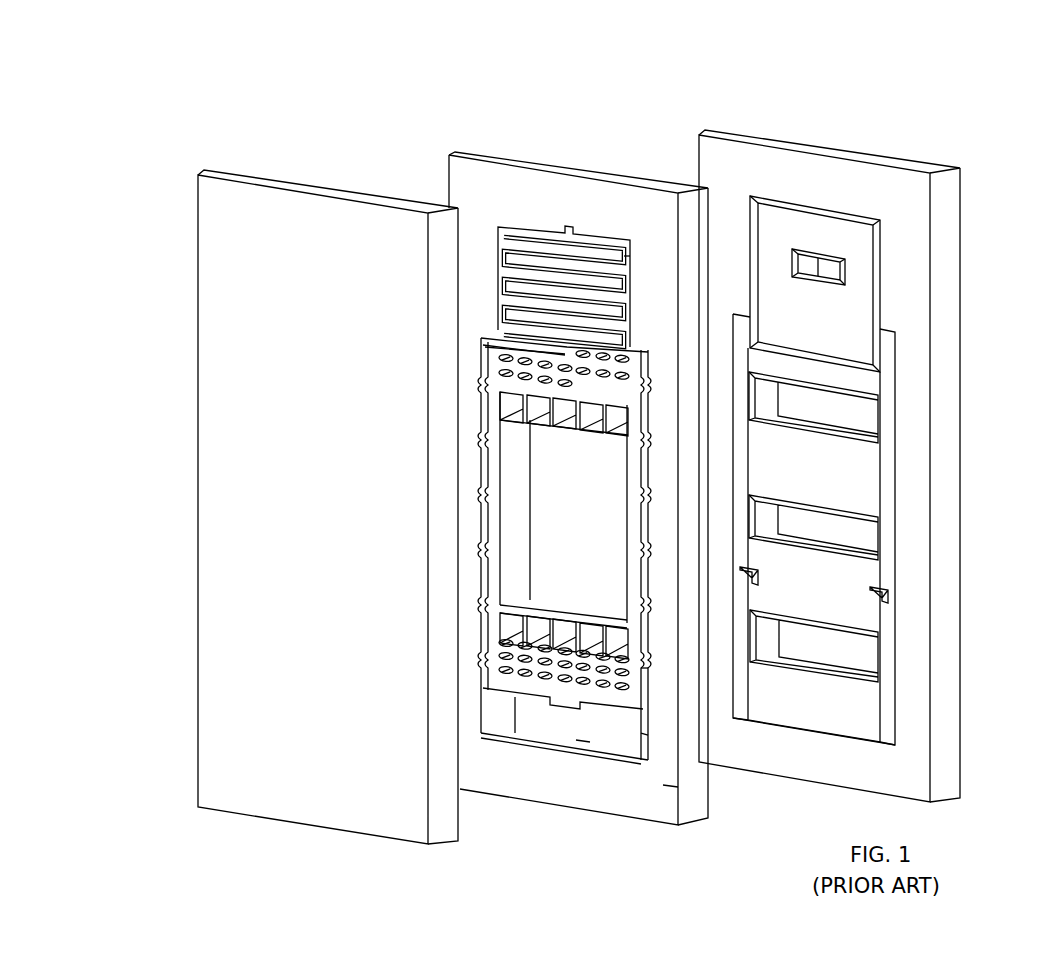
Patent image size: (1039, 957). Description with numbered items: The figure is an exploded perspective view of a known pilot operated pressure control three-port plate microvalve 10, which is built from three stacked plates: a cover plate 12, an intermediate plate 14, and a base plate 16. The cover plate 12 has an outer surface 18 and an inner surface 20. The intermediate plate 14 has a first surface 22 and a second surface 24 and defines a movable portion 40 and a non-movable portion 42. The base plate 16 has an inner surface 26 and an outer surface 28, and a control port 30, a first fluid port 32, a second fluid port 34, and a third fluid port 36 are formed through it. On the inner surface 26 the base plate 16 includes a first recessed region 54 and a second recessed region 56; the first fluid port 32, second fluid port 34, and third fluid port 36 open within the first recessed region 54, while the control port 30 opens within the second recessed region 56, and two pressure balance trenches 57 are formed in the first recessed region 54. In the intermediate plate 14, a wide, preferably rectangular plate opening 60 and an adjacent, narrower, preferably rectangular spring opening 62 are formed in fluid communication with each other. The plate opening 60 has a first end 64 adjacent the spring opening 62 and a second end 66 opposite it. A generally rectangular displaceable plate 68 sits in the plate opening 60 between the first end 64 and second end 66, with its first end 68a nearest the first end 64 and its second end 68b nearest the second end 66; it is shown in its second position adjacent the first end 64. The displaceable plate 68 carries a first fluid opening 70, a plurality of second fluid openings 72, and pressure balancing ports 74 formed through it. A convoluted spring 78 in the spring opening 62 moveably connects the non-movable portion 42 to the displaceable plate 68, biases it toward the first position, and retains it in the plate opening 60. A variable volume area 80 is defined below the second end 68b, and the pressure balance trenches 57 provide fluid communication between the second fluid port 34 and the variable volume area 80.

The microvalve 10 is at (153, 97).
The cover plate 12 is at (328, 480).
The intermediate plate 14 is at (573, 480).
The base plate 16 is at (859, 440).
The outer surface 18 is at (234, 219).
The inner surface 20 is at (277, 177).
The first surface 22 is at (484, 193).
The second surface 24 is at (535, 155).
The inner surface 26 is at (736, 175).
The outer surface 28 is at (780, 135).
The control port 30 is at (838, 270).
The first fluid port 32 is at (870, 655).
The second fluid port 34 is at (870, 533).
The third fluid port 36 is at (870, 415).
The movable portion 40 is at (652, 674).
The non-movable portion 42 is at (663, 785).
The first recessed region 54 is at (870, 474).
The second recessed region 56 is at (860, 307).
The pressure balance trenches 57 is at (757, 577).
The plate opening 60 is at (643, 738).
The spring opening 62 is at (596, 233).
The first end 64 is at (646, 358).
The second end 66 is at (585, 745).
The displaceable plate 68 is at (504, 565).
The first end 68a is at (492, 348).
The second end 68b is at (483, 683).
The first fluid opening 70 is at (503, 474).
The second fluid openings 72 is at (588, 425).
The pressure balancing ports 74 is at (506, 363).
The convoluted spring 78 is at (631, 263).
The variable volume area 80 is at (524, 728).